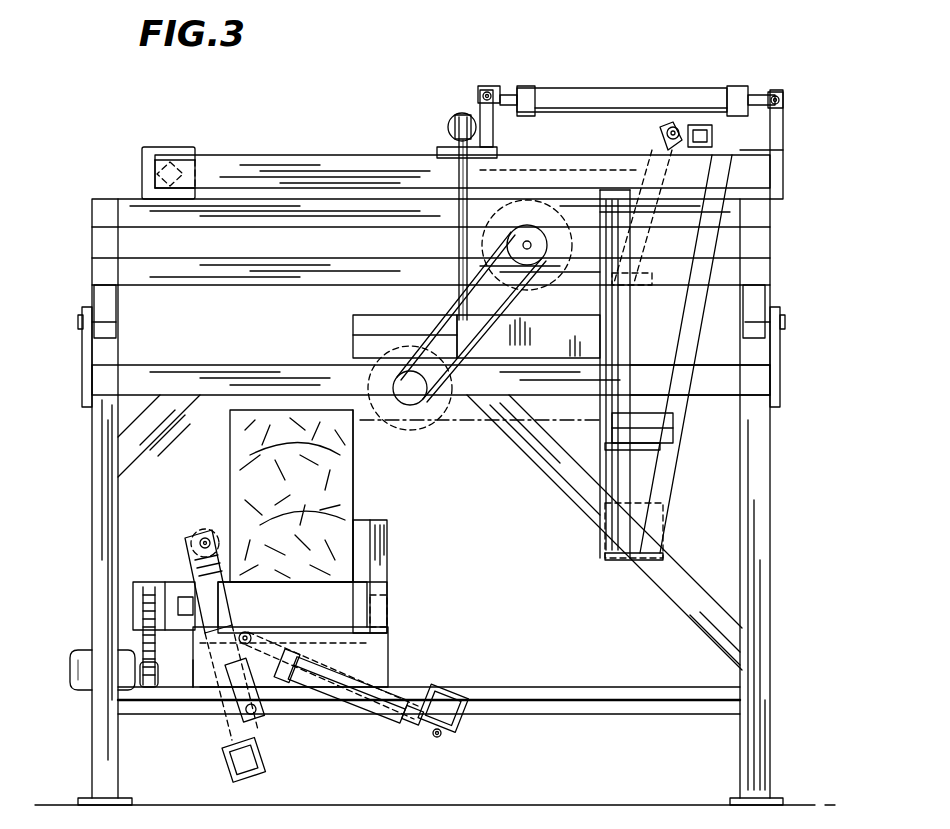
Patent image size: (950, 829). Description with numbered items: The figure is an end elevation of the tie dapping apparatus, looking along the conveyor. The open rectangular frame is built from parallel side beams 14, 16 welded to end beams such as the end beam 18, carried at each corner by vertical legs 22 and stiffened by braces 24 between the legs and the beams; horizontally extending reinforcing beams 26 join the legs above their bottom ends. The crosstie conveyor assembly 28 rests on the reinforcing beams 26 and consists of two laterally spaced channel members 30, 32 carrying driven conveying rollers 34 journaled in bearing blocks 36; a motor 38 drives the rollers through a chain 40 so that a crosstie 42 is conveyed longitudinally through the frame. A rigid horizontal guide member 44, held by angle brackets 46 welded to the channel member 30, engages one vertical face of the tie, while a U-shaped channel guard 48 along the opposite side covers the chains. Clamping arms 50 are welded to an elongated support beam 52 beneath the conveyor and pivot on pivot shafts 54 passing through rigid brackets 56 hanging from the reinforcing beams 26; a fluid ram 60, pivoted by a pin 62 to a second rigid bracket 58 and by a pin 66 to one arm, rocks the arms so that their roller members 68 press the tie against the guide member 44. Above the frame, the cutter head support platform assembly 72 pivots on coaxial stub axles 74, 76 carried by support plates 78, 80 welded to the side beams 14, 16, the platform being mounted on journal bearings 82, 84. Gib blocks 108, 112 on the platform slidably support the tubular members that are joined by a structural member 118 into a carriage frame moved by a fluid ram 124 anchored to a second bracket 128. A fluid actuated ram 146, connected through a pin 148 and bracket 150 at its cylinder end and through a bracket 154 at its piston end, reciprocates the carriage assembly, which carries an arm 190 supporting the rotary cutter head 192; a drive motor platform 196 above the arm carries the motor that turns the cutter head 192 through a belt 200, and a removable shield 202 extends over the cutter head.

The side beam 14 is at (100, 378).
The side beam 16 is at (760, 381).
The end beam 18 is at (723, 386).
The vertical legs 22 is at (96, 534).
The braces 24 is at (150, 430).
The reinforcing beams 26 is at (670, 706).
The crosstie conveyor assembly 28 is at (395, 556).
The channel member 30 is at (380, 665).
The channel member 32 is at (190, 668).
The driven conveying rollers 34 is at (350, 598).
The bearing blocks 36 is at (390, 612).
The motor 38 is at (72, 660).
The chain 40 is at (143, 633).
The crosstie 42 is at (345, 464).
The horizontal guide member 44 is at (362, 520).
The angle brackets 46 is at (378, 536).
The U-shaped channel guard 48 is at (134, 590).
The clamping arms 50 is at (195, 535).
The support beam 52 is at (252, 785).
The pivot shafts 54 is at (232, 750).
The rigid brackets 56 is at (255, 718).
The second rigid bracket 58 is at (444, 725).
The fluid ram 60 is at (395, 738).
The pin 62 is at (428, 745).
The pin 66 is at (248, 632).
The roller member 68 is at (220, 535).
The cutter head support platform assembly 72 is at (88, 226).
The stub axle 74 is at (78, 322).
The stub axle 76 is at (786, 322).
The support plate 78 is at (86, 352).
The support plate 80 is at (776, 350).
The journal bearing 82 is at (100, 298).
The journal bearing 84 is at (760, 298).
The gib block 108 is at (170, 147).
The gib block 112 is at (783, 170).
The structural member 118 is at (312, 155).
The fluid ram 124 is at (456, 115).
The second bracket 128 is at (458, 165).
The fluid actuated ram 146 is at (618, 88).
The pin 148 is at (780, 93).
The bracket 150 is at (783, 125).
The bracket 154 is at (482, 90).
The arm 190 is at (355, 340).
The cutter head 192 is at (430, 410).
The drive motor platform 196 is at (545, 319).
The belt 200 is at (440, 316).
The removable shield 202 is at (355, 318).